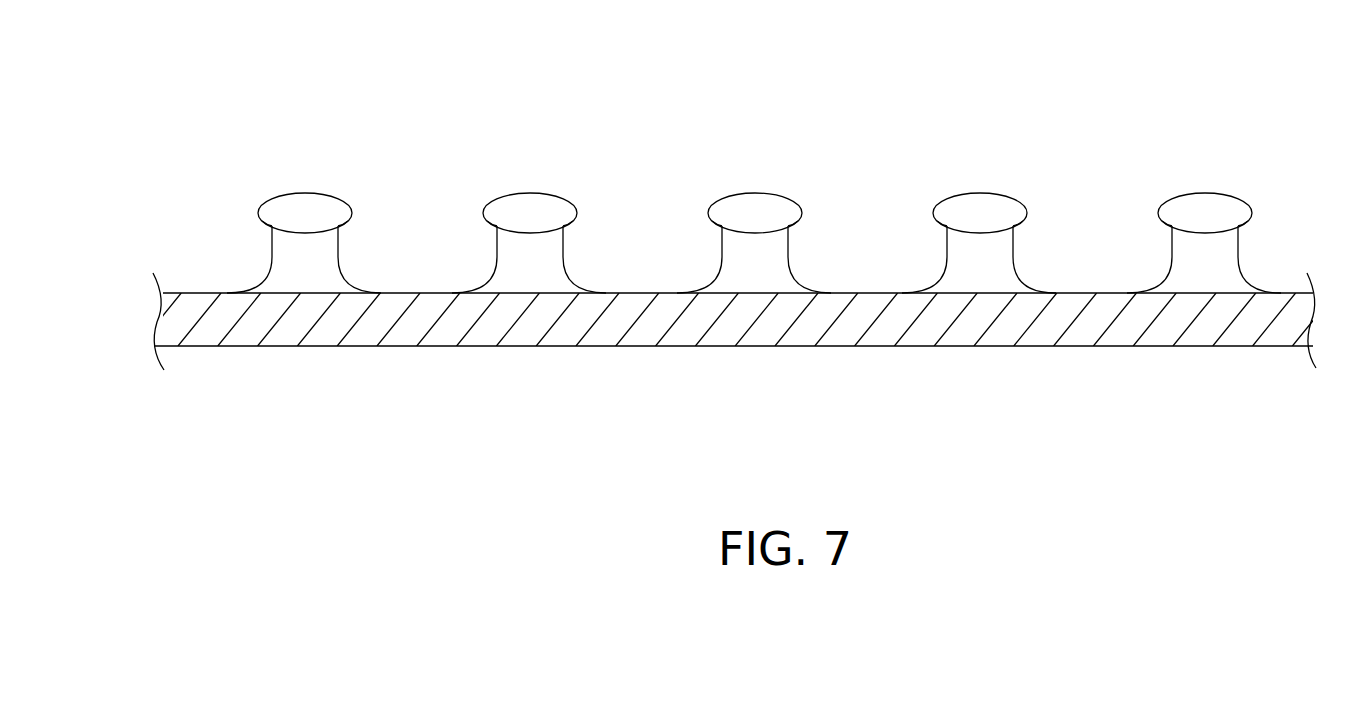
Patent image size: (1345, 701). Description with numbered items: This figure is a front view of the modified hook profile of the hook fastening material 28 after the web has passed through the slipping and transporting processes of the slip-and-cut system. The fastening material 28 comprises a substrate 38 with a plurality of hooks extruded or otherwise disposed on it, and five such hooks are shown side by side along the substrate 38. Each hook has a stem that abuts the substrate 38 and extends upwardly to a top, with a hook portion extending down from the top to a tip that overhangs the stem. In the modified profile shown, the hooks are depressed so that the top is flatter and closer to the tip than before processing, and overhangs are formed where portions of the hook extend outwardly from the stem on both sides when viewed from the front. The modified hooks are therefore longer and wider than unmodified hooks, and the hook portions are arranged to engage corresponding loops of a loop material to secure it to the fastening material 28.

The fastening material 28 is at (290, 63).
The substrate 38 is at (405, 328).